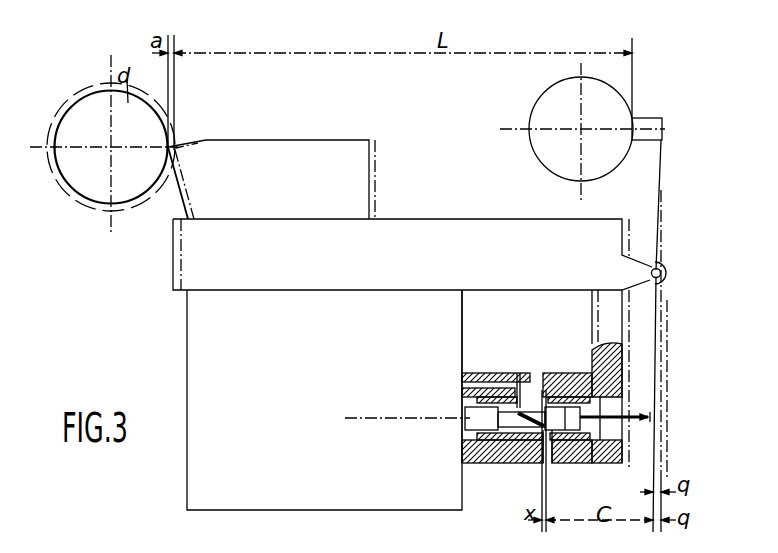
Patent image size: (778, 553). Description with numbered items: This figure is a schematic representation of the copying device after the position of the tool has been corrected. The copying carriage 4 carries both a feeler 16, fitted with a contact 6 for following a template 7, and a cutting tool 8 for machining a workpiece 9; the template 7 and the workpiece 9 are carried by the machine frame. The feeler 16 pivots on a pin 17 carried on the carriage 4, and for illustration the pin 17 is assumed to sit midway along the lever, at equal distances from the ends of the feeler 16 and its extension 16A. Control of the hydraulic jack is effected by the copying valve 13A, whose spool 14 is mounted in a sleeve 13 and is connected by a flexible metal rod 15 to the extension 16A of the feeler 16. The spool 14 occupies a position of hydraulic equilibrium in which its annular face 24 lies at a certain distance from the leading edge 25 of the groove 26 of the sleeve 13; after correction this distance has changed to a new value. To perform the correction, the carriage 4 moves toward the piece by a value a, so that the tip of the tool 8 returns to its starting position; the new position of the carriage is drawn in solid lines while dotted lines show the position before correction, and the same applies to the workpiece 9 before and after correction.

The copying carriage 4 is at (430, 246).
The contact 6 is at (648, 127).
The template 7 is at (561, 108).
The cutting tool 8 is at (193, 165).
The workpiece 9 is at (93, 103).
The sleeve 13 is at (492, 456).
The copying valve 13A is at (518, 458).
The spool 14 is at (564, 412).
The flexible metal rod 15 is at (637, 416).
The feeler 16 is at (659, 169).
The extension 16A is at (654, 372).
The pin 17 is at (662, 268).
The annular face 24 is at (518, 373).
The leading edge 25 is at (537, 460).
The groove 26 is at (536, 408).